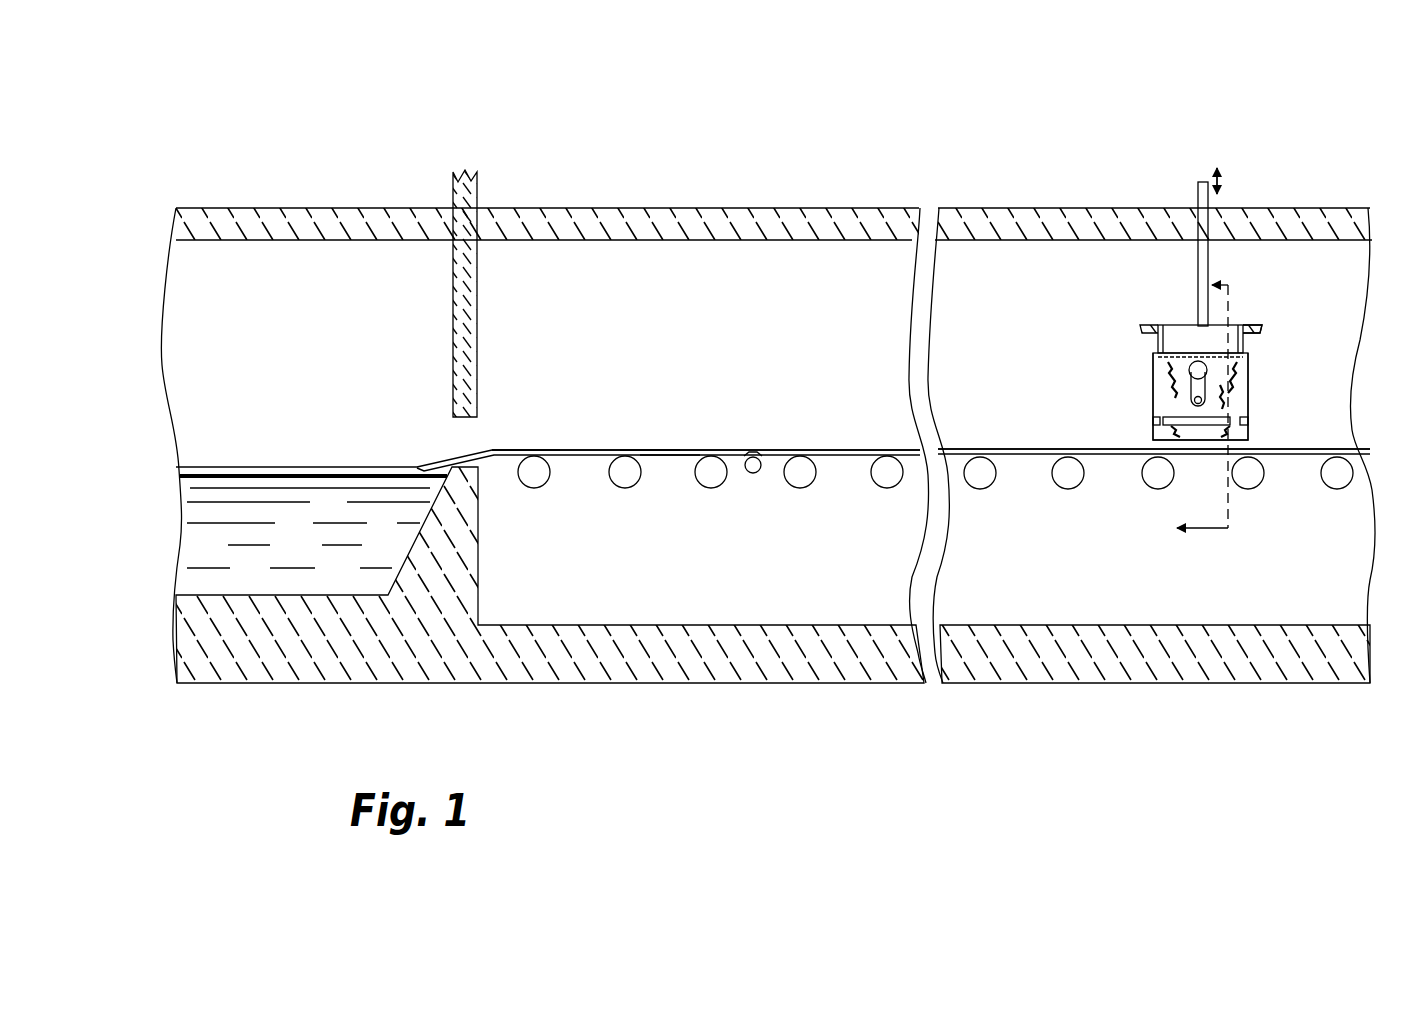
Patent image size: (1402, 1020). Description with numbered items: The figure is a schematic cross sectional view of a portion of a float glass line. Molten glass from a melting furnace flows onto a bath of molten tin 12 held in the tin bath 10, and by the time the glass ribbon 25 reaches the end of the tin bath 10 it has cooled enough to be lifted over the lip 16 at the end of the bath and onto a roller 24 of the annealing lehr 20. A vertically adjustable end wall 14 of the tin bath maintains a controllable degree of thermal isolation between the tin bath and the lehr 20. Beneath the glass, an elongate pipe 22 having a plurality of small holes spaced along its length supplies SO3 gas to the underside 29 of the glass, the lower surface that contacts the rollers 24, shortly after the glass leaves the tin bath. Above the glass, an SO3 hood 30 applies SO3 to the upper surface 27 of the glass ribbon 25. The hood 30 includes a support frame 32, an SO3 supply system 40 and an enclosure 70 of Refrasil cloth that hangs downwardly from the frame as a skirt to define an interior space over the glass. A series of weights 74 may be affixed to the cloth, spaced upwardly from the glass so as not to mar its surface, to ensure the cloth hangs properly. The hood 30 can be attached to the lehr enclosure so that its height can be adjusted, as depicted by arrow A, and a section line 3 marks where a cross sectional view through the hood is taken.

The tin bath 10 is at (226, 205).
The bath of molten tin 12 is at (190, 526).
The vertically adjustable end wall 14 is at (453, 290).
The lip 16 is at (484, 470).
The annealing lehr 20 is at (647, 195).
The elongate pipe 22 is at (753, 475).
The roller 24 is at (611, 479).
The glass ribbon 25 is at (541, 446).
The upper surface of the glass 27 is at (660, 448).
The underside of the glass 29 is at (650, 453).
The SO3 hood 30 is at (1150, 343).
The support frame 32 is at (1262, 322).
The SO3 supply system 40 is at (1210, 372).
The enclosure 70 is at (1155, 378).
The weights 74 is at (1243, 428).
The arrow A is at (1225, 178).
The section line 3 is at (1217, 405).